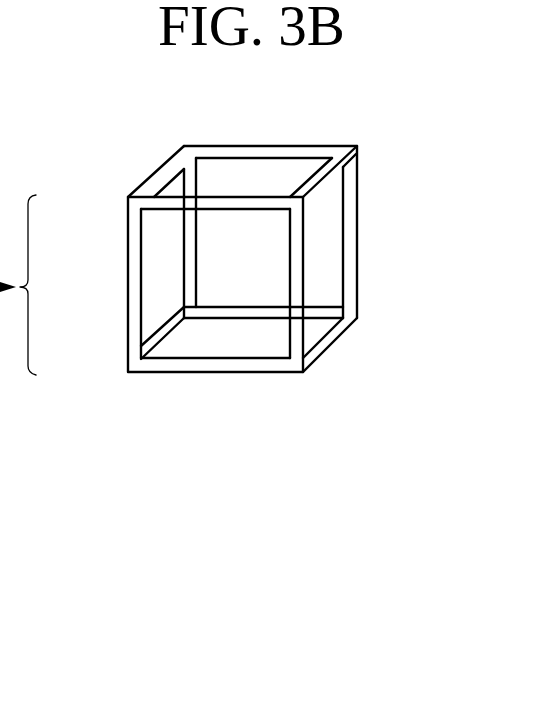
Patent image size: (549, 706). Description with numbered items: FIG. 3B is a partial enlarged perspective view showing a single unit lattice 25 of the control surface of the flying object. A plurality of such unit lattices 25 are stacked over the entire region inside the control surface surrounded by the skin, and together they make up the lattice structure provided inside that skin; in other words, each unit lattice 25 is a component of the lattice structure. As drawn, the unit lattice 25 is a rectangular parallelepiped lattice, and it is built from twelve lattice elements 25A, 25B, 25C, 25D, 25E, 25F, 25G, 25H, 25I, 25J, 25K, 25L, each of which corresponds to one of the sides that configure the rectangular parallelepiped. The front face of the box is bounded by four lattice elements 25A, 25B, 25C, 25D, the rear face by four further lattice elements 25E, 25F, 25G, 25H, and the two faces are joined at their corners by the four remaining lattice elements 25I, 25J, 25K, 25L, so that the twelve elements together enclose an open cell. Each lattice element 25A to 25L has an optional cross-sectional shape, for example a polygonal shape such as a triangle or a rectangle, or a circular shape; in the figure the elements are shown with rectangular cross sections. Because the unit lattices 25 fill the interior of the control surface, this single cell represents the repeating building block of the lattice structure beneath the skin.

The unit lattice 25 is at (368, 241).
The lattice element 25A is at (128, 257).
The lattice element 25B is at (195, 373).
The lattice element 25C is at (289, 272).
The lattice element 25D is at (223, 194).
The lattice element 25E is at (199, 158).
The lattice element 25F is at (267, 322).
The lattice element 25G is at (357, 263).
The lattice element 25H is at (307, 146).
The lattice element 25I is at (157, 171).
The lattice element 25J is at (168, 318).
The lattice element 25K is at (337, 340).
The lattice element 25L is at (322, 202).